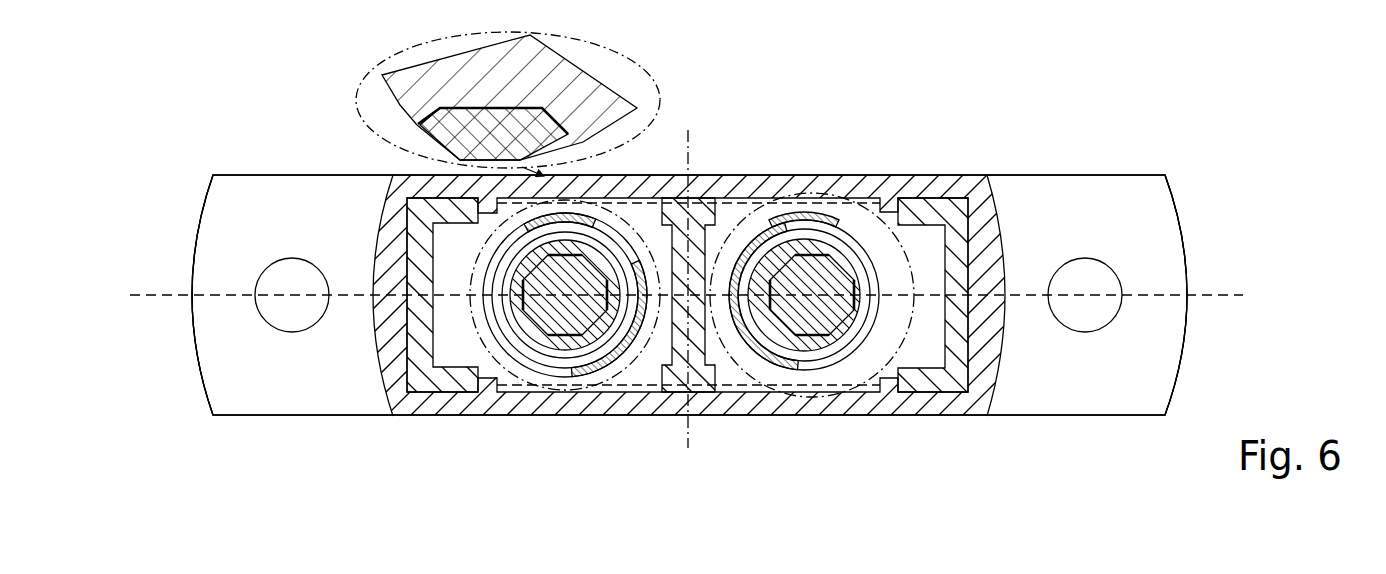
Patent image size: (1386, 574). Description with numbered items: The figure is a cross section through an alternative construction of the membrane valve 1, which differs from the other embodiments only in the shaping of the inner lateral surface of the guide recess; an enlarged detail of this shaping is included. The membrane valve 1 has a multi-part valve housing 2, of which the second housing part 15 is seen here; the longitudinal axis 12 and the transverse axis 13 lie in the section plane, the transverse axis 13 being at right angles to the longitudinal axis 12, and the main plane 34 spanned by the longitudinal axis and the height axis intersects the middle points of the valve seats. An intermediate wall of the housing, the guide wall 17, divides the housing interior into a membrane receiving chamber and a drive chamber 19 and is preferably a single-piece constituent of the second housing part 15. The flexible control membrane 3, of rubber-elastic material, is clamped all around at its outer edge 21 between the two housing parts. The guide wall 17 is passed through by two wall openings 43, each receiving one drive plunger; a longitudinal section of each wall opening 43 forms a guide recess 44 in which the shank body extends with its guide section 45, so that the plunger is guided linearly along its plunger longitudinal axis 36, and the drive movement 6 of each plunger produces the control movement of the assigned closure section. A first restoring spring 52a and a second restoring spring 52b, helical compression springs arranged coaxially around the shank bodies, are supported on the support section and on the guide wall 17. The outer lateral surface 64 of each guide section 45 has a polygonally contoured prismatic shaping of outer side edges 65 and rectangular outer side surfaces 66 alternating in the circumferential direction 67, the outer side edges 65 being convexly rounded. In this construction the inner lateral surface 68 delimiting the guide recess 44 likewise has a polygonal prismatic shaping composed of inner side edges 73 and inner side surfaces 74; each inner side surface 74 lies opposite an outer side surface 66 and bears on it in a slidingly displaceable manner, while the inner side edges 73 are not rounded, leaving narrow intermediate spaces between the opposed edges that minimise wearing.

The membrane valve 1 is at (1156, 147).
The valve housing 2 is at (208, 420).
The control membrane 3 is at (586, 388).
The drive movement 6 is at (944, 245).
The longitudinal axis 12 is at (1217, 292).
The transverse axis 13 is at (690, 158).
The second housing part 15 is at (221, 195).
The guide wall 17 is at (563, 350).
The drive chamber 19 is at (455, 348).
The outer edge 21 is at (878, 186).
The main plane 34 is at (238, 294).
The plunger longitudinal axis 36 is at (640, 392).
The wall opening 43 is at (590, 322).
The guide recess 44 is at (548, 340).
The guide section 45 is at (558, 298).
The first restoring spring 52a is at (695, 274).
The second restoring spring 52b is at (789, 243).
The outer lateral surface 64 is at (600, 244).
The outer side edges 65 is at (760, 258).
The outer side surfaces 66 is at (534, 248).
The circumferential direction 67 is at (527, 303).
The inner lateral surface 68 is at (560, 228).
The inner side edges 73 is at (530, 138).
The inner side surfaces 74 is at (546, 272).